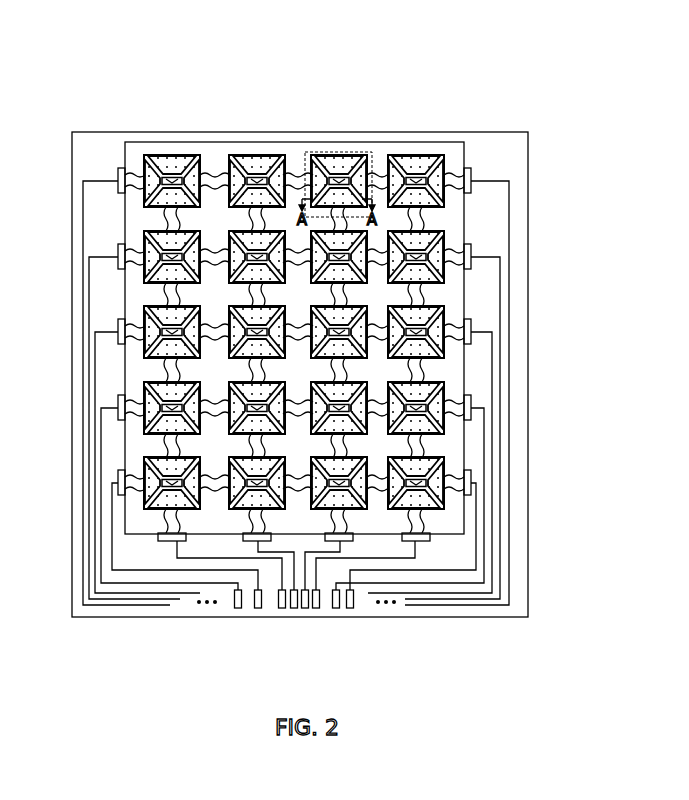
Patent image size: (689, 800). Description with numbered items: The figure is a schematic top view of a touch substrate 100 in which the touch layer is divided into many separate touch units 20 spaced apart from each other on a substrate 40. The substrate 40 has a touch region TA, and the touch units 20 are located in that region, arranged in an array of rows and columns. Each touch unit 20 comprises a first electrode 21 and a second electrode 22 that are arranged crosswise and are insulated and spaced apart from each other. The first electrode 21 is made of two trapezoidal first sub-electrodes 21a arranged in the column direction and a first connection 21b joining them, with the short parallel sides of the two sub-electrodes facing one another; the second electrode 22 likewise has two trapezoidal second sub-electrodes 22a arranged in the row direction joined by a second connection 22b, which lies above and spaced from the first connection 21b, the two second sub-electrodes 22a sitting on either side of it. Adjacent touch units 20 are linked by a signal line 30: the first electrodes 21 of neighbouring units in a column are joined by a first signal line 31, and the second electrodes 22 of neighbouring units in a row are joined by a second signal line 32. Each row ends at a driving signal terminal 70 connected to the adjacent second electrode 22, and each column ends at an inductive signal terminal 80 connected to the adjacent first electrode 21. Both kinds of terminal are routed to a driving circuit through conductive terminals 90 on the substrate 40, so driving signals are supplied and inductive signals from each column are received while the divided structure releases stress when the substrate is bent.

The touch substrate 100 is at (518, 68).
The substrate 40 is at (502, 167).
The touch region TA is at (142, 217).
The driving signal terminal 70 is at (118, 173).
The signal line 30 is at (195, 57).
The first signal line 31 is at (172, 222).
The second signal line 32 is at (216, 182).
The first electrode 21 is at (223, 90).
The first sub-electrode 21a is at (283, 170).
The first connection 21b is at (259, 164).
The touch unit 20 is at (345, 152).
The second electrode 22 is at (487, 90).
The second sub-electrode 22a is at (440, 166).
The second connection 22b is at (420, 162).
The inductive signal terminal 80 is at (428, 541).
The conductive terminal 90 is at (355, 608).